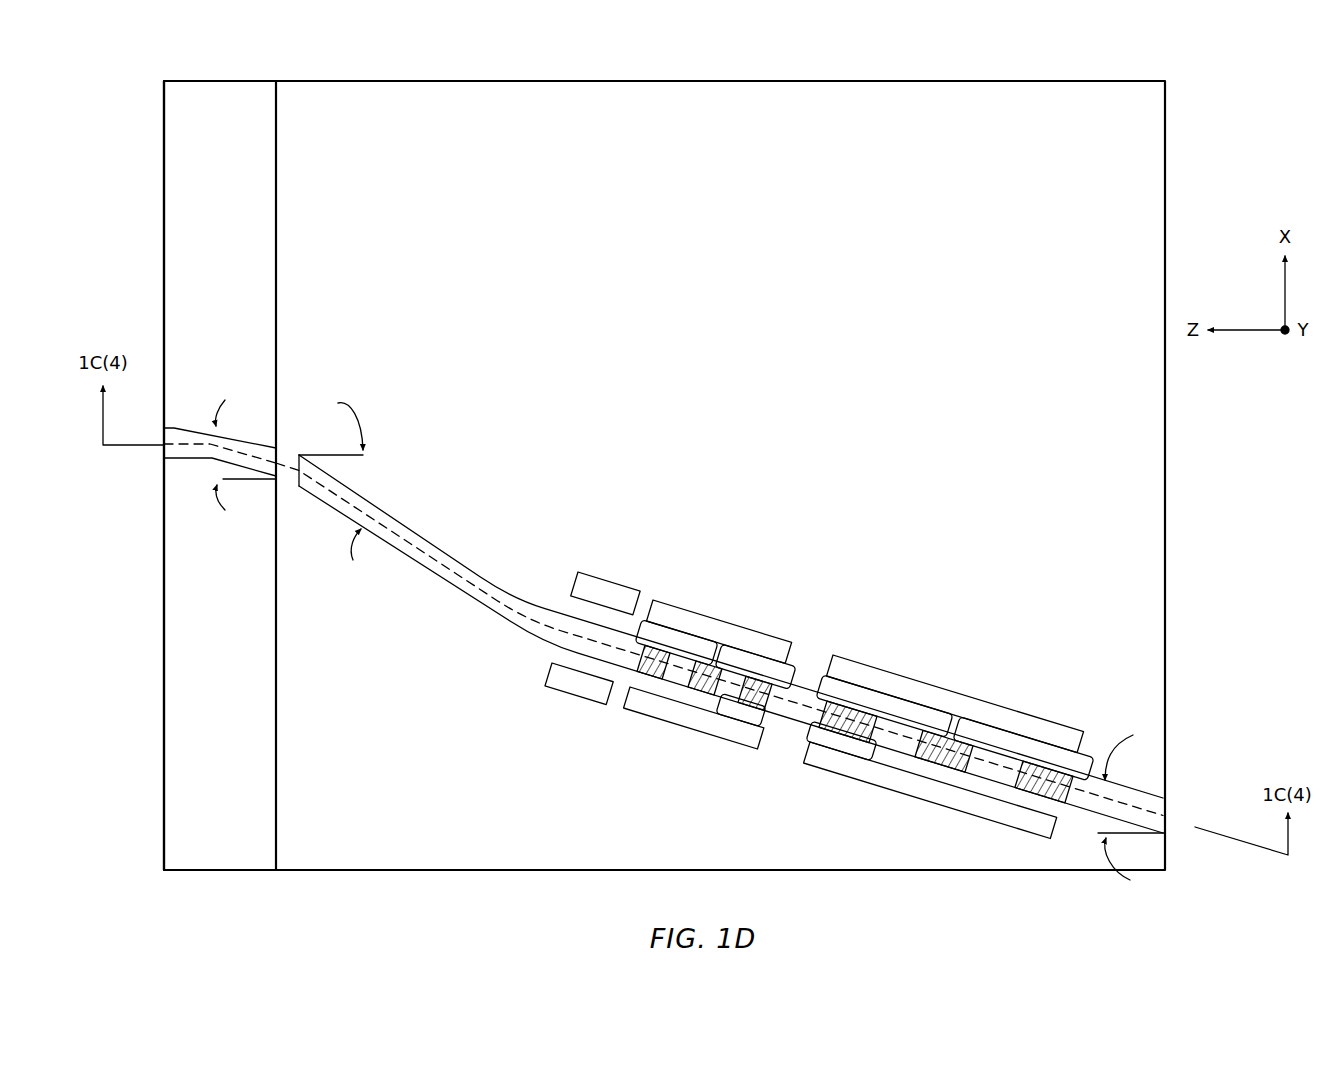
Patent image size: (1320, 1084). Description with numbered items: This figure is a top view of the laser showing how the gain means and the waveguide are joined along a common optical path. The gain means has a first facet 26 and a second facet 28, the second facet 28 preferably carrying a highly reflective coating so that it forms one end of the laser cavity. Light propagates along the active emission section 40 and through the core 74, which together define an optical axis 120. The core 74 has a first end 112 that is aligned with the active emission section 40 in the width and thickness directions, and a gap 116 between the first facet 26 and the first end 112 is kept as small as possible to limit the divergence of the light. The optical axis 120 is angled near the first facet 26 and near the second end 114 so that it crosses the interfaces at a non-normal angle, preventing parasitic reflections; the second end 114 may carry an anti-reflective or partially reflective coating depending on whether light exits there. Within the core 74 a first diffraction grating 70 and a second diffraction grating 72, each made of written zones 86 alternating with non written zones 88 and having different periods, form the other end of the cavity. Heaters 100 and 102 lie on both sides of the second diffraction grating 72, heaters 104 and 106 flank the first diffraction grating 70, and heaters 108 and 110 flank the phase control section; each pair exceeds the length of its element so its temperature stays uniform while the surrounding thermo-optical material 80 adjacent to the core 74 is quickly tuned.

The first facet 26 is at (276, 172).
The second facet 28 is at (164, 172).
The active emission section 40 is at (211, 278).
The thermo-optical material 80 is at (727, 282).
The first diffraction grating 70 is at (720, 652).
The second diffraction grating 72 is at (957, 717).
The core 74 is at (463, 603).
The written zones 86 is at (775, 687).
The non written zones 88 is at (867, 741).
The heater 100 is at (853, 668).
The heater 102 is at (830, 764).
The heater 104 is at (660, 602).
The heater 106 is at (638, 705).
The heater 108 is at (585, 583).
The heater 110 is at (560, 681).
The first end 112 is at (299, 456).
The second end 114 is at (1160, 815).
The gap 116 is at (282, 478).
The optical axis 120 is at (458, 575).